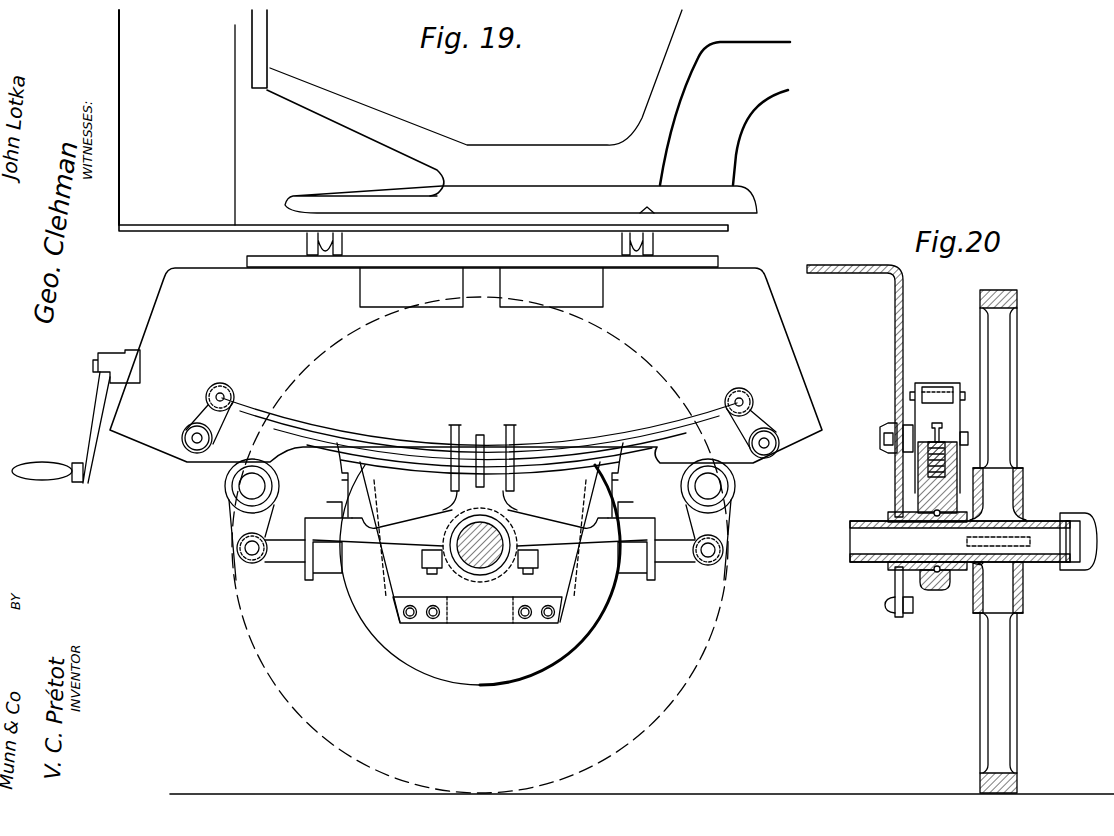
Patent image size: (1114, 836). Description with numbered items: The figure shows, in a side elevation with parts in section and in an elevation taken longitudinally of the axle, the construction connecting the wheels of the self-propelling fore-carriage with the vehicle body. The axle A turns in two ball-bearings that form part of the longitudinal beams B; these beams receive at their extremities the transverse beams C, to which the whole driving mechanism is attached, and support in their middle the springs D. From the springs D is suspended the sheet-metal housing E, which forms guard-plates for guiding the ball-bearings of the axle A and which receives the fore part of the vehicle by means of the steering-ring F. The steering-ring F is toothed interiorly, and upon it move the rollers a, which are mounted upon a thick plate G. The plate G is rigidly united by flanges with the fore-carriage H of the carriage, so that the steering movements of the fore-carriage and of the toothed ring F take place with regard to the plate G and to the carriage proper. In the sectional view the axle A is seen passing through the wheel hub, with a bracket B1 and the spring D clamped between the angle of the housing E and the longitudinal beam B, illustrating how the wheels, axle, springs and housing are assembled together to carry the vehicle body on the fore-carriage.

In FIG. 19, the axle A is at (507, 550).
In FIG. 20, the axle A is at (973, 541).
In FIG. 19, the longitudinal beams B is at (480, 542).
In FIG. 20, the longitudinal beams B is at (918, 497).
In FIG. 19, the bracket B1 is at (528, 572).
In FIG. 20, the bracket B1 is at (940, 586).
In FIG. 19, the transverse beams C is at (342, 492).
In FIG. 19, the springs D is at (428, 442).
In FIG. 20, the springs D is at (953, 453).
In FIG. 19, the sheet-metal housing E is at (417, 375).
In FIG. 20, the sheet-metal housing E is at (869, 441).
In FIG. 19, the steering-ring F is at (420, 266).
In FIG. 19, the thick plate G is at (523, 232).
In FIG. 19, the fore-carriage H is at (521, 199).
In FIG. 19, the rollers a is at (344, 246).